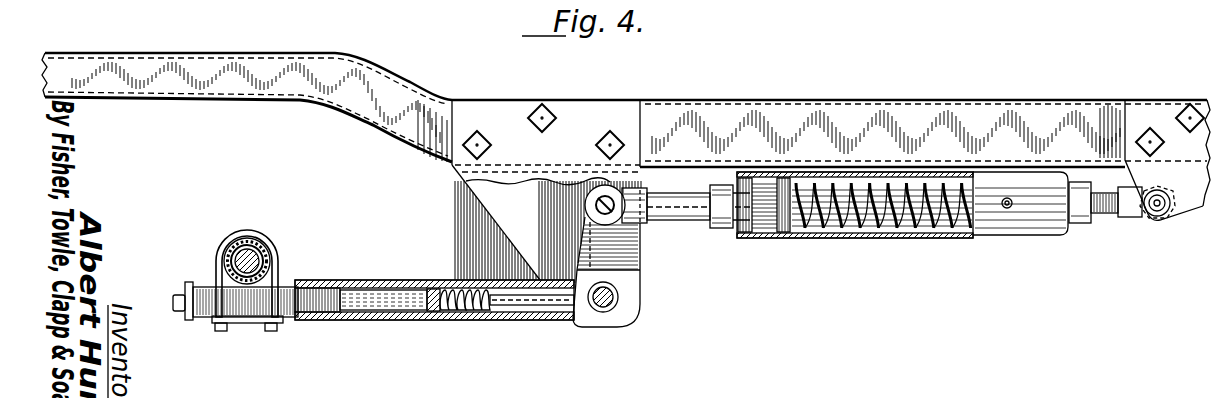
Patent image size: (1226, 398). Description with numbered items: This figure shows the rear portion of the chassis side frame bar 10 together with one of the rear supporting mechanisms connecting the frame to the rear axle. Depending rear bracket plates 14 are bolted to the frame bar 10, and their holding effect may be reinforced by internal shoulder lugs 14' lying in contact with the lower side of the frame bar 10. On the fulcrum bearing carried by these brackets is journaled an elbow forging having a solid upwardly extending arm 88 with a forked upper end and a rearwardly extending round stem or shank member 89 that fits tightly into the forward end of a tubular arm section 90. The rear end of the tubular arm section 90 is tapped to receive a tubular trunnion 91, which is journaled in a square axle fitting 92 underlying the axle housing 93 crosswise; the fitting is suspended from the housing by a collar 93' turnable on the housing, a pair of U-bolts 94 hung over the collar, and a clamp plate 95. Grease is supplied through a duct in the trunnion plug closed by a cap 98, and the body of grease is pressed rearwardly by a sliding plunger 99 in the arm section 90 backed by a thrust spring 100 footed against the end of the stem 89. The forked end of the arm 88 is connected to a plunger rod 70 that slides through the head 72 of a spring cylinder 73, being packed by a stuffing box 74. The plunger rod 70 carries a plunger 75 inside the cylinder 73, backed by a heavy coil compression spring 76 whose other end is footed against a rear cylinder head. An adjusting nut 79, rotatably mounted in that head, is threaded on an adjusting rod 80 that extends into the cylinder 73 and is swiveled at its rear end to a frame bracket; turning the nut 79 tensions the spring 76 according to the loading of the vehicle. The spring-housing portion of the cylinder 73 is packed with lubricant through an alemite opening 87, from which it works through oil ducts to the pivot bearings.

The chassis side frame bar 10 is at (829, 110).
The rear bracket plates 14 is at (523, 191).
The internal shoulder lugs 14' is at (543, 136).
The plunger rod 70 is at (665, 200).
The head of spring cylinder 72 is at (745, 239).
The spring cylinder 73 is at (911, 239).
The stuffing box 74 is at (722, 230).
The plunger 75 is at (782, 233).
The coil compression spring 76 is at (843, 235).
The adjusting nut 79 is at (1083, 223).
The threaded adjusting rod 80 is at (1112, 215).
The alemite opening 87 is at (1009, 209).
The upwardly extending arm 88 is at (630, 255).
The stem or shank member 89 is at (540, 300).
The tubular arm section 90 is at (388, 322).
The tubular trunnion 91 is at (323, 290).
The axle fitting 92 is at (203, 316).
The axle housing 93 is at (268, 261).
The collar 93' is at (274, 255).
The U-bolts 94 is at (250, 234).
The clamp plate 95 is at (248, 324).
The cap 98 is at (176, 311).
The sliding plunger 99 is at (435, 320).
The thrust spring 100 is at (472, 310).